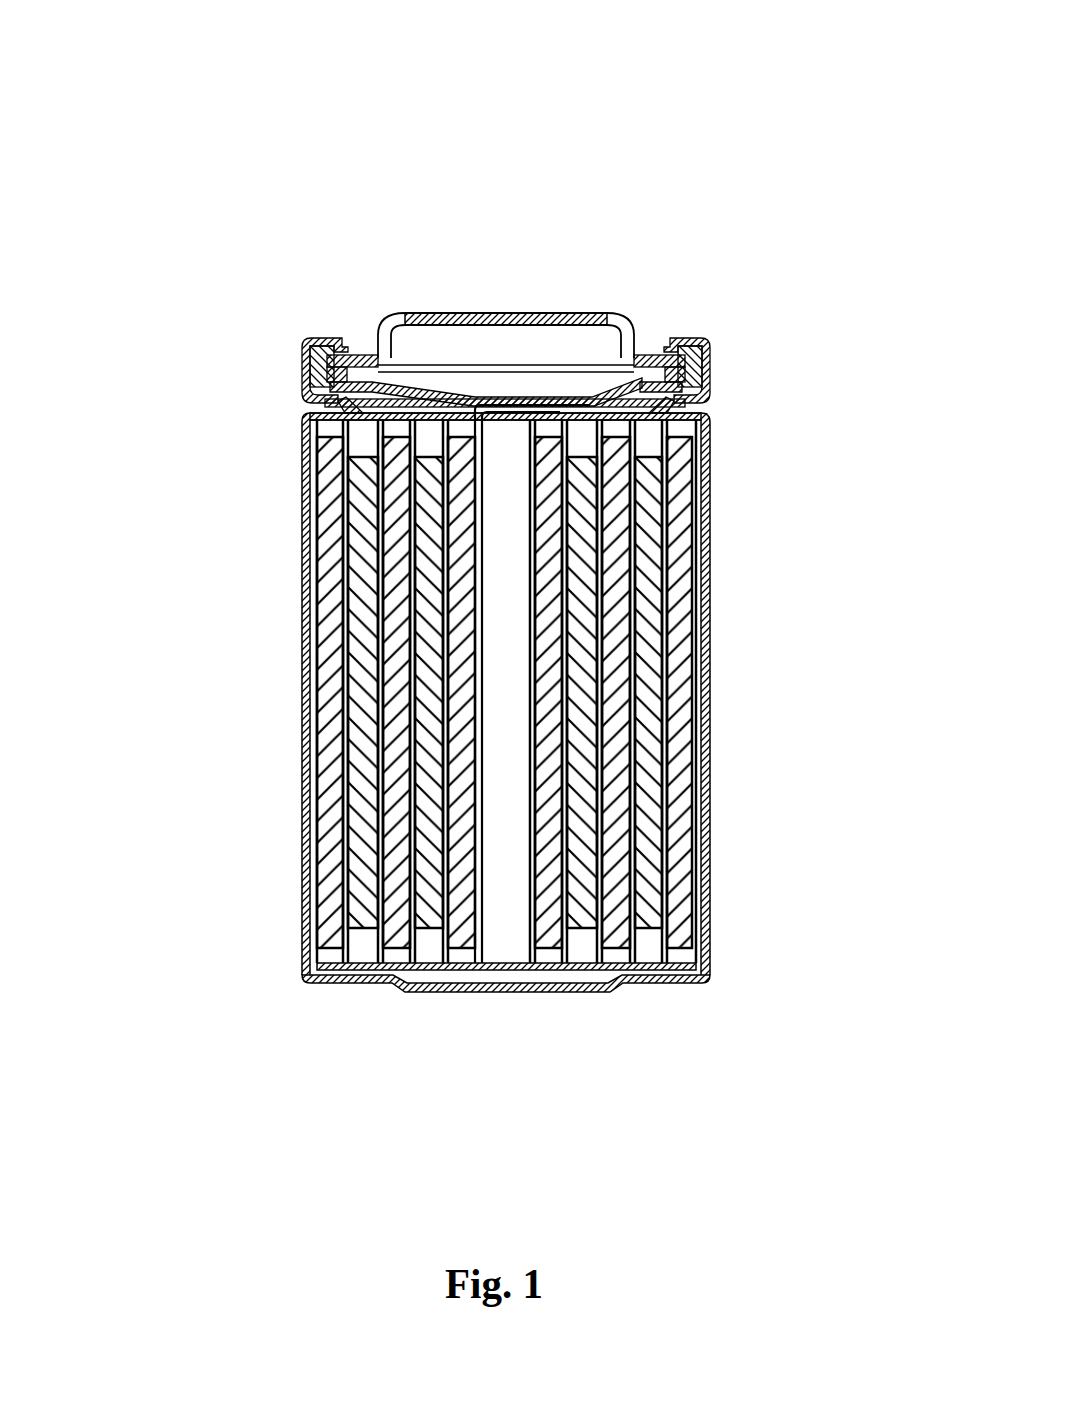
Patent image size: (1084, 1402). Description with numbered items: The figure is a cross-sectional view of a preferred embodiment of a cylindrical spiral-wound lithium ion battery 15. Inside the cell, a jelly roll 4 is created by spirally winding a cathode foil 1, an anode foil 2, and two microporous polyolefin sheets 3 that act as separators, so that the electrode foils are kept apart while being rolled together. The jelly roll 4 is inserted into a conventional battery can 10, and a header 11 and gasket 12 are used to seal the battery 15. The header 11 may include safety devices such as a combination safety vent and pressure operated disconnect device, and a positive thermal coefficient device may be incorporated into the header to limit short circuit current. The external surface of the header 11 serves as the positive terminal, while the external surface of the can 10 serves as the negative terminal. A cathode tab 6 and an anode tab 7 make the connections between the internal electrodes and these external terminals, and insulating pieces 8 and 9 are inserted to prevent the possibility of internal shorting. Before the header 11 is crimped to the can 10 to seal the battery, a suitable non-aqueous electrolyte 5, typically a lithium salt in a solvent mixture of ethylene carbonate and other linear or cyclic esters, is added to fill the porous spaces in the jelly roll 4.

The cathode foil 1 is at (655, 777).
The anode foil 2 is at (323, 786).
The microporous polyolefin sheets 3 is at (345, 692).
The jelly roll 4 is at (312, 420).
The non-aqueous electrolyte 5 is at (618, 696).
The cathode tab 6 is at (466, 396).
The anode tab 7 is at (407, 991).
The insulating piece 8 is at (343, 400).
The insulating piece 9 is at (689, 976).
The battery can 10 is at (718, 535).
The header 11 is at (468, 316).
The gasket 12 is at (712, 345).
The battery 15 is at (668, 196).